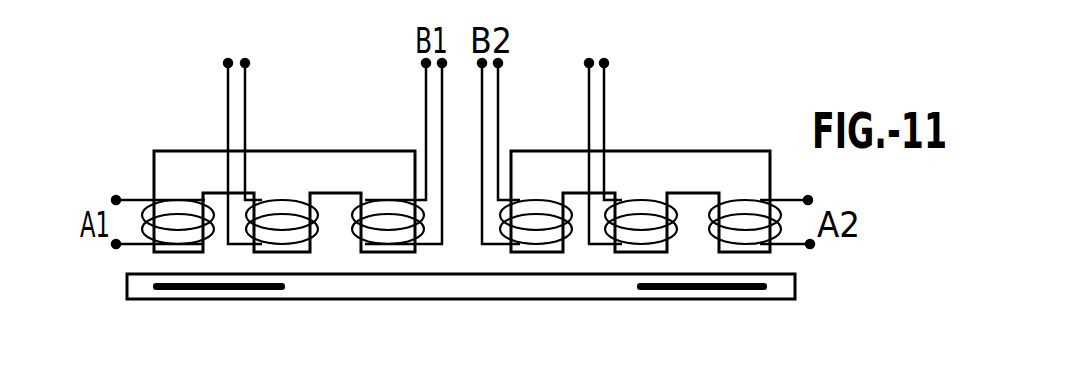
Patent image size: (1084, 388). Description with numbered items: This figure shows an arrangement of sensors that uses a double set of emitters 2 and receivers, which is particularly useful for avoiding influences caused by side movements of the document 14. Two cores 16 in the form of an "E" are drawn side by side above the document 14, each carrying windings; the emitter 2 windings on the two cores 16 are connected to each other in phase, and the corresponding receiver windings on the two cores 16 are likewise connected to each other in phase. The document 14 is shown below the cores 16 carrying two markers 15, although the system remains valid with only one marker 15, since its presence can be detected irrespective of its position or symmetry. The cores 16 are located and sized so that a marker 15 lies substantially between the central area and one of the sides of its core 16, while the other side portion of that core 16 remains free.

The emitter 2 is at (423, 132).
The document 14 is at (412, 288).
The marker 15 is at (197, 289).
The core 16 is at (202, 162).